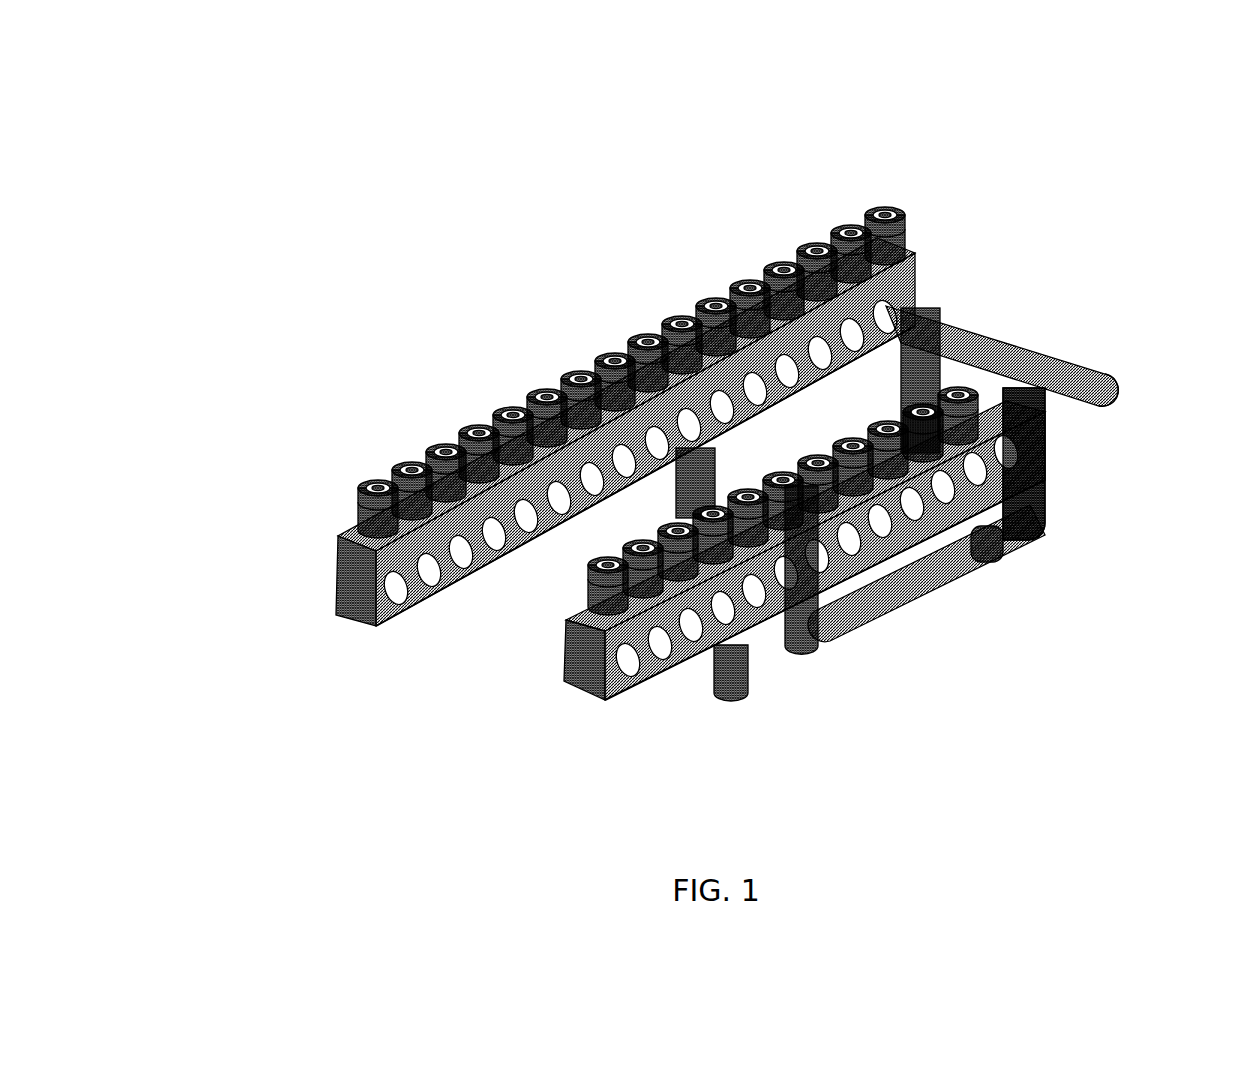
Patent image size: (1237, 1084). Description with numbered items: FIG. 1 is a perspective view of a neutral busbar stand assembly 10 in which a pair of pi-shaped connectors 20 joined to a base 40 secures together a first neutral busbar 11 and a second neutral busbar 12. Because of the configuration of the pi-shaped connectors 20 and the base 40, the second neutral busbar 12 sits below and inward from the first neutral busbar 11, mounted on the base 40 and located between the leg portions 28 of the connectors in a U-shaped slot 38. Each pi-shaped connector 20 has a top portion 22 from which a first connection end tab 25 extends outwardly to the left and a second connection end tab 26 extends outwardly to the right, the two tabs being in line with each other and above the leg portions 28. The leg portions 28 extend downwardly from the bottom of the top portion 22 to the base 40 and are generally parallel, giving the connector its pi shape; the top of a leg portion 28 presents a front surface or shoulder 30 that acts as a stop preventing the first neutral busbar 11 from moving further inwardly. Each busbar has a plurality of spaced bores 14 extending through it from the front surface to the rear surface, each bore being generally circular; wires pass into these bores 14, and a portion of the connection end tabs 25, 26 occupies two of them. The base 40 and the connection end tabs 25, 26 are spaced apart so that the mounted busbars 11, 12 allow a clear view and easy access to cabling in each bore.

The neutral busbar stand assembly 10 is at (1119, 127).
The first neutral busbar 11 is at (312, 537).
The second neutral busbar 12 is at (607, 690).
The bores 14 is at (503, 550).
The pi-shaped connectors 20 is at (1040, 337).
The top portion 22 is at (987, 327).
The first connection end tab 25 is at (829, 222).
The second connection end tab 26 is at (1110, 378).
The leg portions 28 is at (937, 310).
The front surface or shoulder 30 is at (650, 483).
The U-shaped slot 38 is at (795, 650).
The base 40 is at (993, 553).